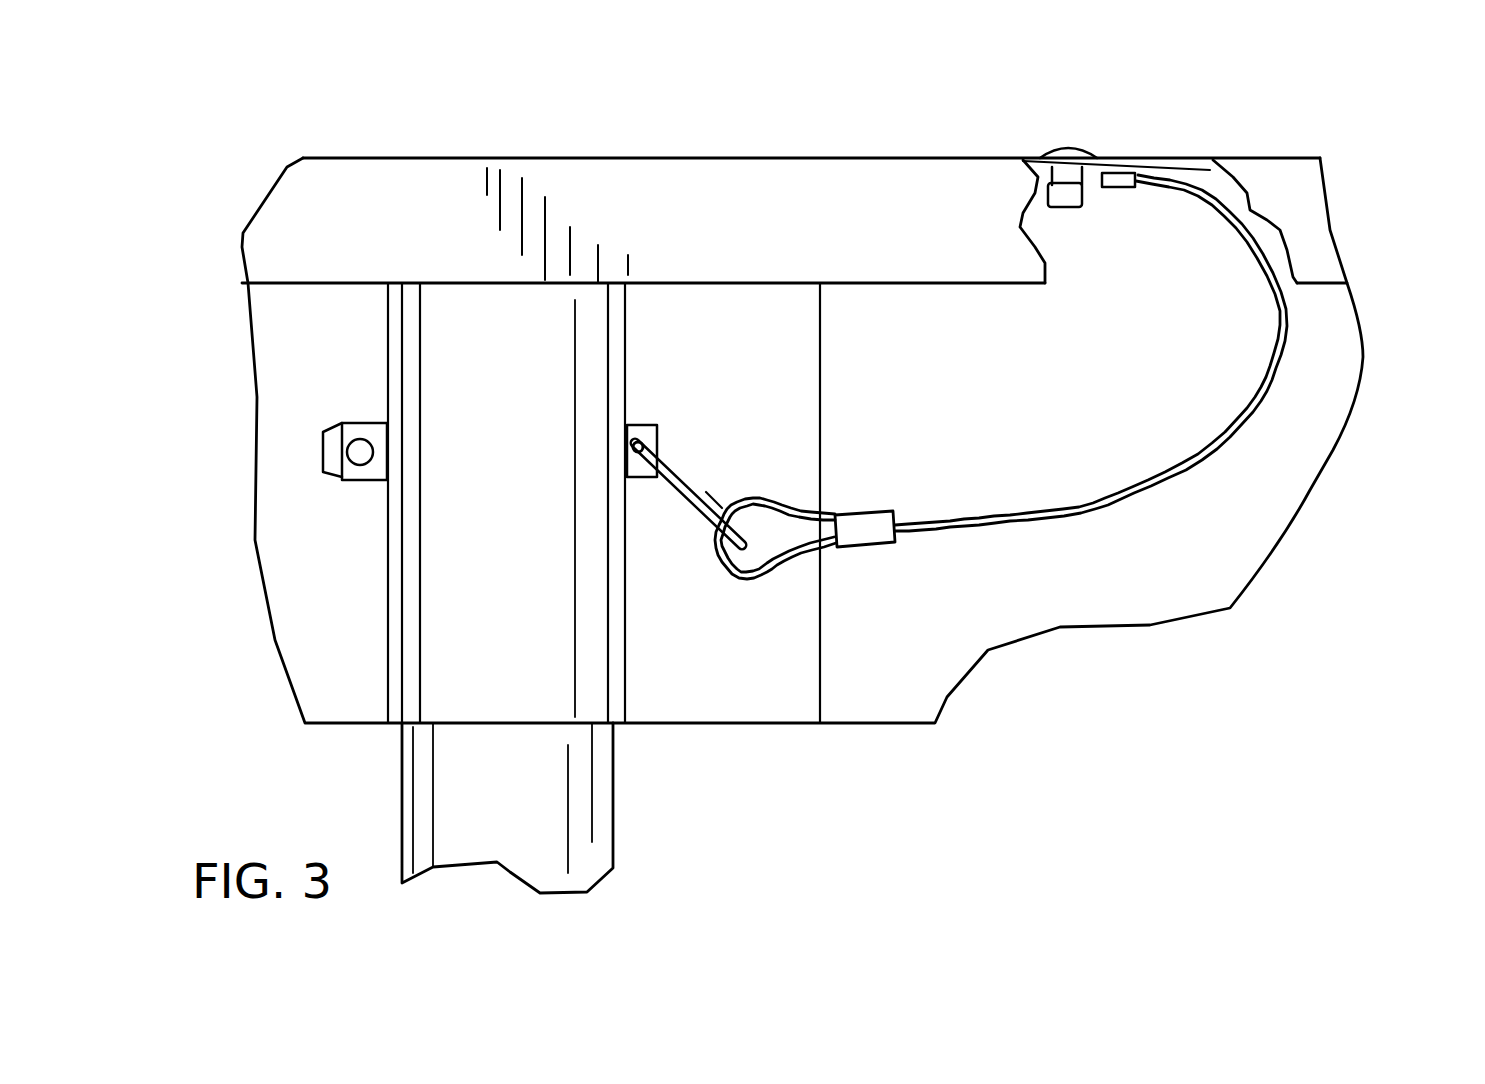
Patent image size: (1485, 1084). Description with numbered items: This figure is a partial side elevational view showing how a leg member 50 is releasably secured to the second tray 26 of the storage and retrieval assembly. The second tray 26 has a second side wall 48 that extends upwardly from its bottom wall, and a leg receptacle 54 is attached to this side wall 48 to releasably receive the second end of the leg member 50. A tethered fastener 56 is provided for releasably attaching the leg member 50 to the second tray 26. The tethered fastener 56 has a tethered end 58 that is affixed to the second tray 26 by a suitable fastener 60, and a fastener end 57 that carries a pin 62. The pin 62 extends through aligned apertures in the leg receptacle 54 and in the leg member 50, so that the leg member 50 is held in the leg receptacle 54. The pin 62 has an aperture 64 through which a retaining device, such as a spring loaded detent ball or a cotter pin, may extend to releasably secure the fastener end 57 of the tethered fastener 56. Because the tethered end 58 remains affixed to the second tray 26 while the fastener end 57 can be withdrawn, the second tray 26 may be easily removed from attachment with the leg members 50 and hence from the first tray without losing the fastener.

The second tray 26 is at (460, 149).
The second side wall 48 is at (1147, 602).
The leg member 50 is at (592, 842).
The leg receptacle 54 is at (400, 683).
The tethered fastener 56 is at (1262, 430).
The fastener end 57 is at (759, 594).
The tethered end 58 is at (1123, 188).
The fastener 60 is at (1068, 148).
The pin 62 is at (650, 430).
The aperture 64 is at (360, 438).